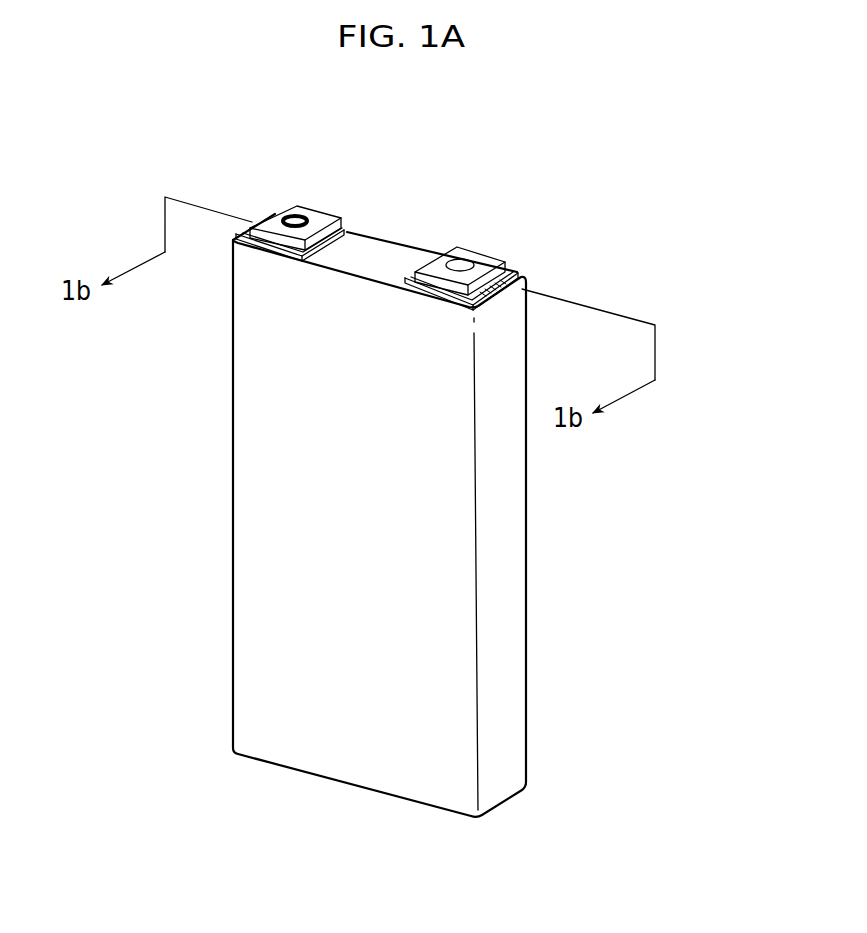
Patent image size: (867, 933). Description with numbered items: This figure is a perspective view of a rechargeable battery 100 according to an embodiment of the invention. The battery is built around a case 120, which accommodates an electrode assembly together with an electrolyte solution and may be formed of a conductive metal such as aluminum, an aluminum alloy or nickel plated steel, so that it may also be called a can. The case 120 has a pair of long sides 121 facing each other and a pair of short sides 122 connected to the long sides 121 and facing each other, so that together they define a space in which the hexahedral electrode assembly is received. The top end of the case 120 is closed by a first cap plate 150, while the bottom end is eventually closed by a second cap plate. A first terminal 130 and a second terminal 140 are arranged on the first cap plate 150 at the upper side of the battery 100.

The rechargeable battery 100 is at (670, 180).
The case 120 is at (543, 550).
The long sides 121 is at (442, 793).
The short sides 122 is at (508, 793).
The first terminal 130 is at (282, 198).
The second terminal 140 is at (489, 251).
The first cap plate 150 is at (382, 255).